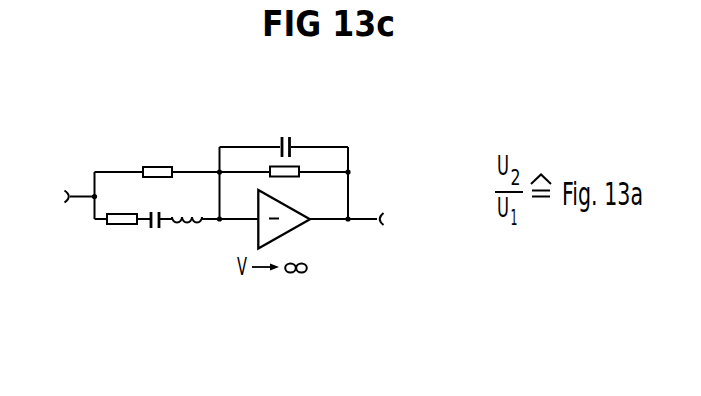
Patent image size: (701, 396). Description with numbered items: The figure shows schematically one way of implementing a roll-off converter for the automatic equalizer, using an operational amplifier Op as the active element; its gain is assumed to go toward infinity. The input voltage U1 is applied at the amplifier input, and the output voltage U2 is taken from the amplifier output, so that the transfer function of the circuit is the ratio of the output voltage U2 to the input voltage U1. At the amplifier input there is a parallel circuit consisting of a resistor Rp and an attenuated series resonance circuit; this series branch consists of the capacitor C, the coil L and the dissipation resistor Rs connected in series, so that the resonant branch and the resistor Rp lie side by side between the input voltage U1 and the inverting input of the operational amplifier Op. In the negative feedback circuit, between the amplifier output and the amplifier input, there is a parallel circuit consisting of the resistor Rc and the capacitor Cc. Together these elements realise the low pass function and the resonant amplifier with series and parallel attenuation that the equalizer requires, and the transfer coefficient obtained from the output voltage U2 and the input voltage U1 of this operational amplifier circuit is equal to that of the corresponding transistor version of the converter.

The input voltage U1 is at (55, 196).
The output voltage U2 is at (396, 218).
The resistor Rp is at (157, 151).
The dissipation resistor Rs is at (122, 238).
The capacitor C is at (153, 236).
The coil L is at (187, 239).
The capacitor Cc is at (285, 126).
The resistor Rc is at (288, 177).
The operational amplifier Op is at (289, 230).